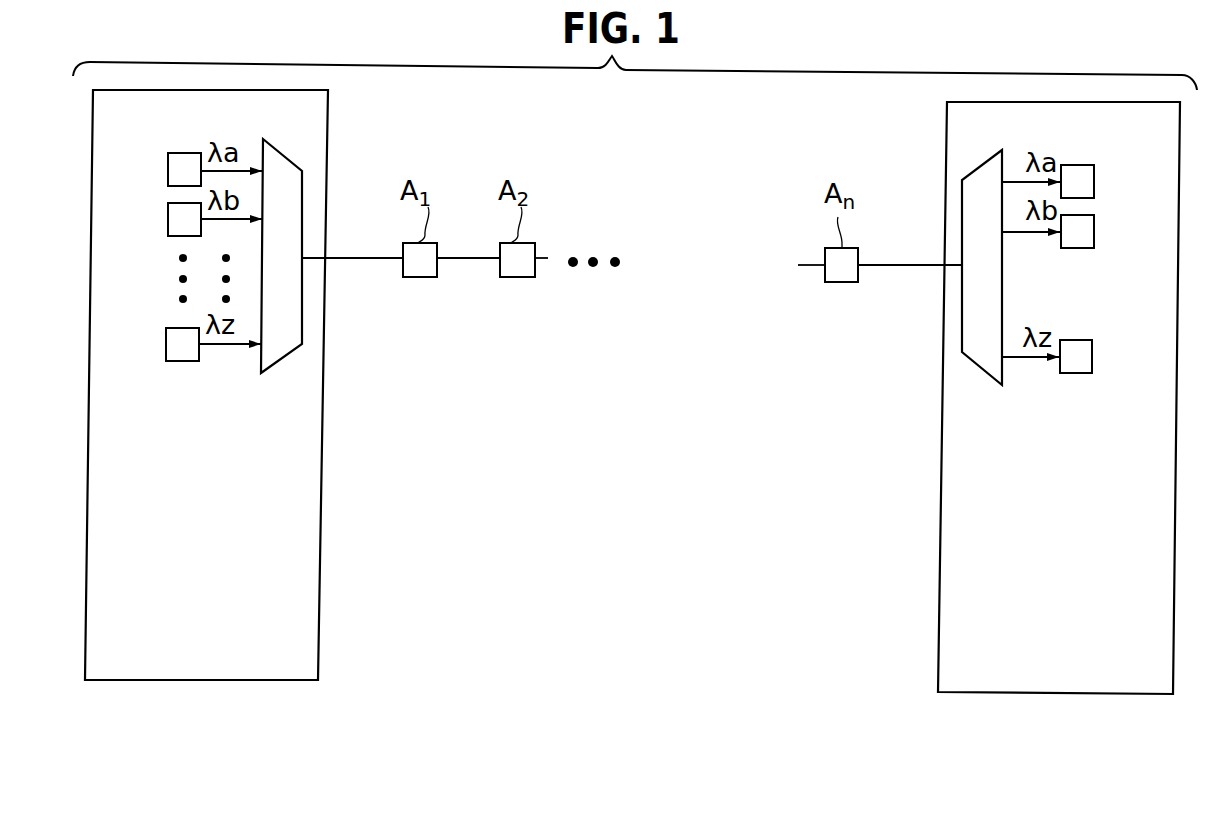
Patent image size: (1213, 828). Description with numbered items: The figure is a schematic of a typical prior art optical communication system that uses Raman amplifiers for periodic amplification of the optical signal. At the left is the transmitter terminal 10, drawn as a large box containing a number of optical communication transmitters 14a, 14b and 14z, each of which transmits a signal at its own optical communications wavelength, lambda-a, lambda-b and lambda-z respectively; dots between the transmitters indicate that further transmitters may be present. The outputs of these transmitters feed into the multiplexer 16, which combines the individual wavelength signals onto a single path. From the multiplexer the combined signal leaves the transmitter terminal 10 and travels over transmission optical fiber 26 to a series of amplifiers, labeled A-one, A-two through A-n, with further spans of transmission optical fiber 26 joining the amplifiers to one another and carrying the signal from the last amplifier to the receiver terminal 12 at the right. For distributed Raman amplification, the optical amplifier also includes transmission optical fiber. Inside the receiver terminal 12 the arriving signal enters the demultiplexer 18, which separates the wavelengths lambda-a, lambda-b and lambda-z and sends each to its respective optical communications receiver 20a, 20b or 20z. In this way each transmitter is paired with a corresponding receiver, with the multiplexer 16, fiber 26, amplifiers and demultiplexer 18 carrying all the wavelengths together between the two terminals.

The transmitter terminal 10 is at (233, 682).
The receiver terminal 12 is at (1012, 695).
The optical communication transmitter 14a is at (168, 165).
The optical communication transmitter 14b is at (168, 214).
The optical communication transmitter 14z is at (166, 340).
The multiplexer 16 is at (299, 158).
The demultiplexer 18 is at (975, 165).
The optical communications receiver 20a is at (1094, 180).
The optical communications receiver 20b is at (1094, 230).
The optical communications receiver 20z is at (1092, 357).
The transmission optical fiber 26 is at (350, 258).